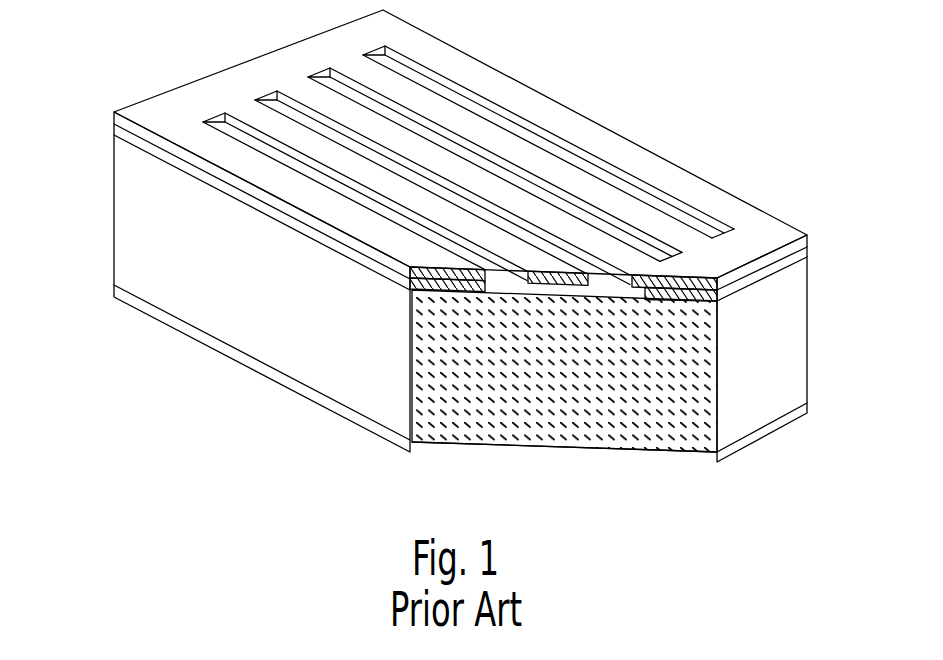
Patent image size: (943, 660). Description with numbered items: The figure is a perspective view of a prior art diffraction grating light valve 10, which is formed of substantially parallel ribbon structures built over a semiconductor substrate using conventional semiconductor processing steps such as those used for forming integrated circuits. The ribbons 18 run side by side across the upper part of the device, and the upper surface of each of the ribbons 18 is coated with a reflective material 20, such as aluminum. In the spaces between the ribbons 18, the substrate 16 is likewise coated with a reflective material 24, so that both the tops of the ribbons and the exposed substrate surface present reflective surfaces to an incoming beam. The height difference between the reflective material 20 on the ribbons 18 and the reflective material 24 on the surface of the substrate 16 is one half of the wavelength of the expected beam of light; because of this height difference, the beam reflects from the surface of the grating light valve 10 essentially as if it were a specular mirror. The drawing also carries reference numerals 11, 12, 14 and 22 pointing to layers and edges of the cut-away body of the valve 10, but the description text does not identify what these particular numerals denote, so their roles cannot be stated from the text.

The grating light valve 10 is at (98, 200).
The lower layer 11 is at (807, 263).
The upper layer 12 is at (807, 248).
The electrode strip 14 is at (398, 268).
The substrate 16 is at (782, 377).
The ribbons 18 is at (248, 113).
The reflective material 20 is at (698, 187).
The edge layer 22 is at (317, 219).
The reflective material 24 is at (608, 285).